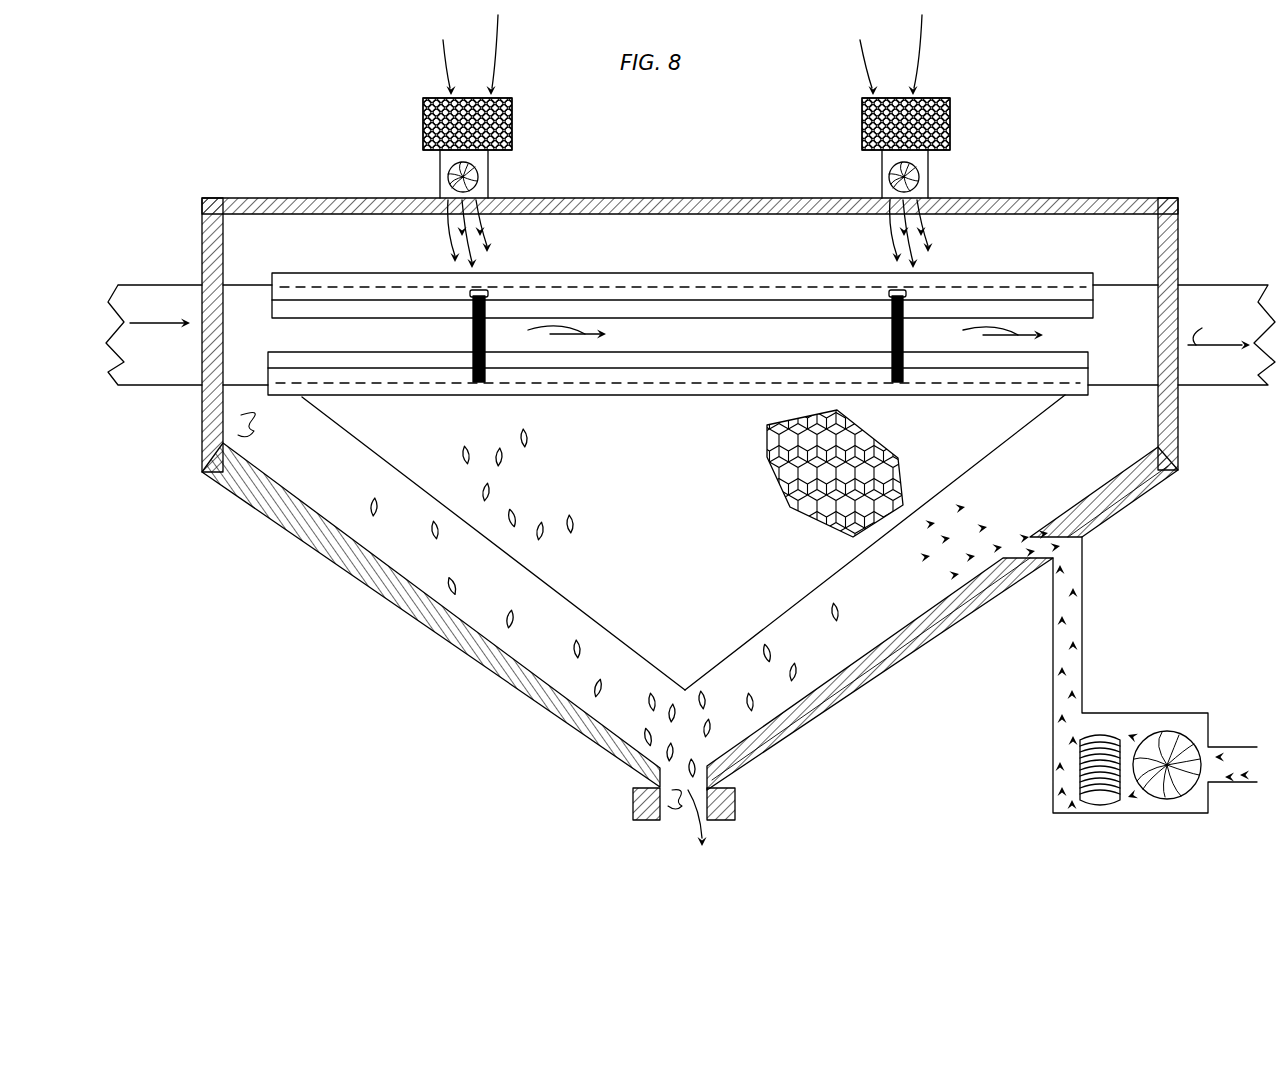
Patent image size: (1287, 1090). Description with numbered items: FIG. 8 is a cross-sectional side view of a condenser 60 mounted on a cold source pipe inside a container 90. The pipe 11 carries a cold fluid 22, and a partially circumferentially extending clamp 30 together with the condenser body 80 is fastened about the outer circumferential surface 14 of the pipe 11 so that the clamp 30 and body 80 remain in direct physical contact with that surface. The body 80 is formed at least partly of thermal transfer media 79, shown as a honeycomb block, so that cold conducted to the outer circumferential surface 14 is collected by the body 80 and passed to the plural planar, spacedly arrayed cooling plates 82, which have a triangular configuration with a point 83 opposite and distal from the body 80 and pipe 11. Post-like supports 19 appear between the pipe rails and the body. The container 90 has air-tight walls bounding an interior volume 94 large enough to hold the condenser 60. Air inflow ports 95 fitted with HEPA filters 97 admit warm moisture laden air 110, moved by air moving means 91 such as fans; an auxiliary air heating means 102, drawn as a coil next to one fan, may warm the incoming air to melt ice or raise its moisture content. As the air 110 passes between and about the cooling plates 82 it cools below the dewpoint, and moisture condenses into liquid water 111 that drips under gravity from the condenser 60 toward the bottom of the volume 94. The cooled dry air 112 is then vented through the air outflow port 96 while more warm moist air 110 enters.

The pipe 11 is at (262, 292).
The outer circumferential surface 14 is at (1128, 284).
The support post 19 is at (472, 331).
The cold fluid 22 is at (875, 327).
The clamp 30 is at (752, 272).
The condenser 60 is at (886, 554).
The thermal transfer media 79 is at (848, 462).
The body 80 is at (740, 397).
The cooling plates 82 is at (650, 564).
The point 83 is at (688, 683).
The container 90 is at (1138, 192).
The air moving means 91 is at (488, 168).
The interior volume 94 is at (243, 420).
The air inflow port 95 is at (450, 162).
The air outflow port 96 is at (661, 793).
The HEPA filter 97 is at (422, 112).
The auxiliary air heating means 102 is at (1080, 752).
The warm moisture laden air 110 is at (450, 62).
The liquid water 111 is at (524, 506).
The cooled dry air 112 is at (708, 820).